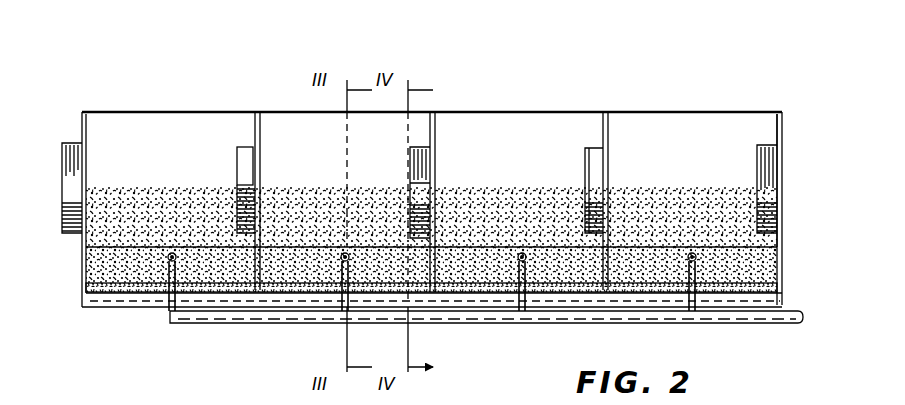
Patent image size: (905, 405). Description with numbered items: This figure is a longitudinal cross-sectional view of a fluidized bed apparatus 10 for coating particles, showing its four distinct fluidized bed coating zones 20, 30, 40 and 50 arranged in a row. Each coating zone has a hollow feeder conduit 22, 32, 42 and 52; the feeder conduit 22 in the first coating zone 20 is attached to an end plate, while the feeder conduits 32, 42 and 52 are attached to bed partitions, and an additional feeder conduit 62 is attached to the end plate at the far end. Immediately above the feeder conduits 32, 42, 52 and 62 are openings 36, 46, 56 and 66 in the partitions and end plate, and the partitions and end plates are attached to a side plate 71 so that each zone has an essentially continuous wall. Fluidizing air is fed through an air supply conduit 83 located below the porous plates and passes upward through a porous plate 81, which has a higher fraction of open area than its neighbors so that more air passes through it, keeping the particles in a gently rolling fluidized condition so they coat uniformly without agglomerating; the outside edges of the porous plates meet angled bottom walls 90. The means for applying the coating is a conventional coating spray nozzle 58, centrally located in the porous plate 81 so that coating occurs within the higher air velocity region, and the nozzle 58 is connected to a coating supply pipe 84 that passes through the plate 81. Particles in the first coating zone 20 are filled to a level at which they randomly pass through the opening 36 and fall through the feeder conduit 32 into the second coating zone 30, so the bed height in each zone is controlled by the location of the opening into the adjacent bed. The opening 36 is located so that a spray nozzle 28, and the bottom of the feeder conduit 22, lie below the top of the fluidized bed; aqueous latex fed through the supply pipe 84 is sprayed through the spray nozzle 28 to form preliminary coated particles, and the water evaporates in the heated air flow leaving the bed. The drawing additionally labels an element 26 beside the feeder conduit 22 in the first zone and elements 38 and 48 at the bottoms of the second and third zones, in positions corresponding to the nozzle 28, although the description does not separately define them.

The fluidized bed apparatus 10 is at (80, 104).
The coating zone 20 is at (683, 129).
The feeder conduit 22 is at (776, 172).
The inlet screen 26 is at (757, 183).
The spray nozzle 28 is at (694, 261).
The coating zone 30 is at (490, 127).
The feeder conduit 32 is at (586, 148).
The opening 36 is at (588, 184).
The second standpipe 38 is at (524, 261).
The coating zone 40 is at (278, 112).
The feeder conduit 42 is at (411, 150).
The opening 46 is at (412, 184).
The third standpipe 48 is at (344, 261).
The coating zone 50 is at (186, 127).
The feeder conduit 52 is at (249, 150).
The opening 56 is at (238, 184).
The coating spray nozzle 58 is at (170, 260).
The feeder conduit 62 is at (70, 236).
The opening 66 is at (90, 186).
The side plate 71 is at (309, 144).
The porous plate 81 is at (88, 291).
The air supply conduit 83 is at (107, 306).
The coating supply pipe 84 is at (217, 313).
The bottom walls 90 is at (495, 272).